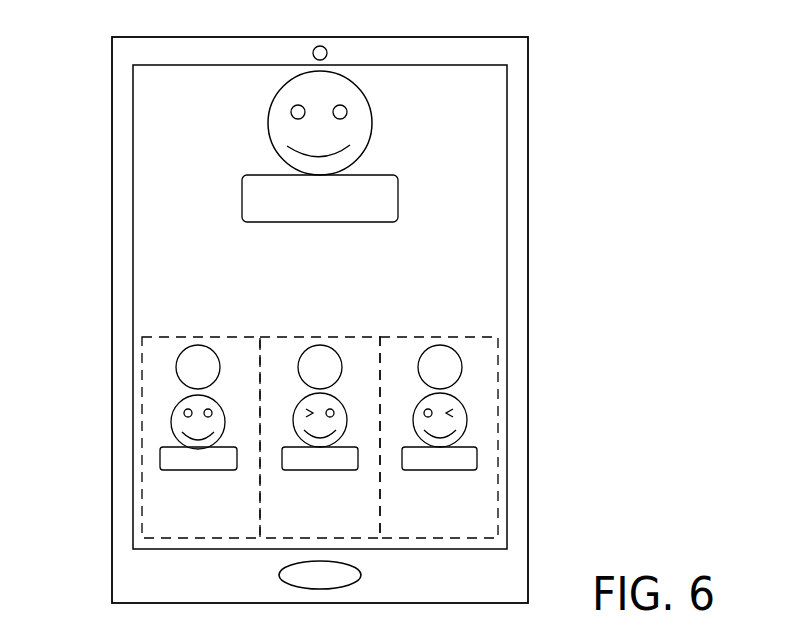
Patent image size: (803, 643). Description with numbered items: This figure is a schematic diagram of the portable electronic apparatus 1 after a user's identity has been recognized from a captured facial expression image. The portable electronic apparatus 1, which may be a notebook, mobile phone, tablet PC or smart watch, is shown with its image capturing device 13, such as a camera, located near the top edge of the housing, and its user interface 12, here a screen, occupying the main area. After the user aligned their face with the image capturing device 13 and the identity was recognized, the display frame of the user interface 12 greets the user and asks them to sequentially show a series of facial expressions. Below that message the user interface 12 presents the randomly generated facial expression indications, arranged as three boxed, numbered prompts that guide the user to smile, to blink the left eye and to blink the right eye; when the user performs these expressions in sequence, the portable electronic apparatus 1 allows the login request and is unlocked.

The portable electronic apparatus 1 is at (49, 57).
The image capturing device 13 is at (318, 53).
The user interface 12 is at (495, 260).